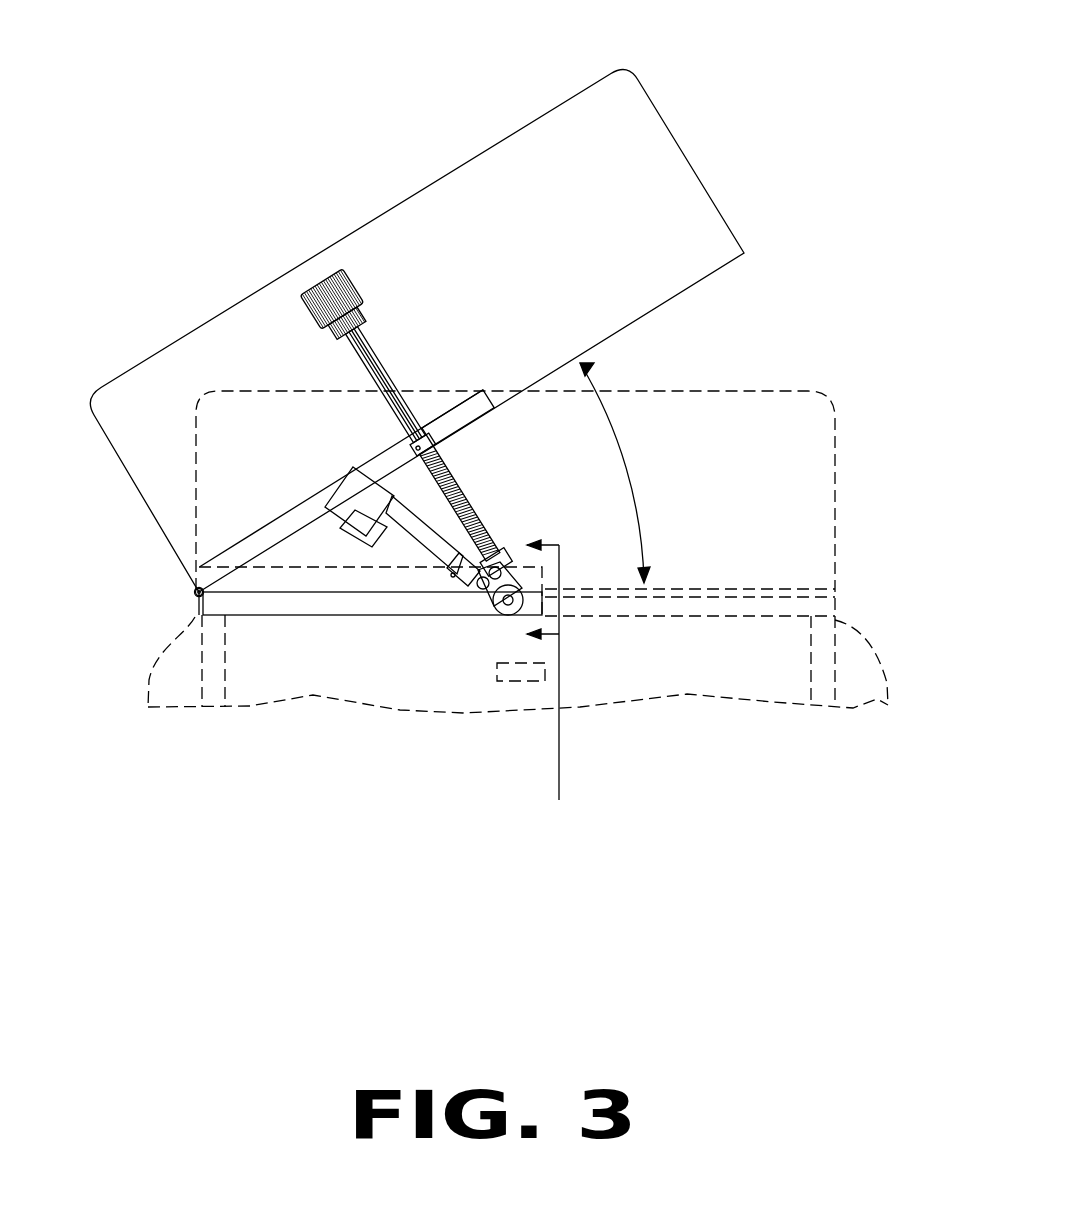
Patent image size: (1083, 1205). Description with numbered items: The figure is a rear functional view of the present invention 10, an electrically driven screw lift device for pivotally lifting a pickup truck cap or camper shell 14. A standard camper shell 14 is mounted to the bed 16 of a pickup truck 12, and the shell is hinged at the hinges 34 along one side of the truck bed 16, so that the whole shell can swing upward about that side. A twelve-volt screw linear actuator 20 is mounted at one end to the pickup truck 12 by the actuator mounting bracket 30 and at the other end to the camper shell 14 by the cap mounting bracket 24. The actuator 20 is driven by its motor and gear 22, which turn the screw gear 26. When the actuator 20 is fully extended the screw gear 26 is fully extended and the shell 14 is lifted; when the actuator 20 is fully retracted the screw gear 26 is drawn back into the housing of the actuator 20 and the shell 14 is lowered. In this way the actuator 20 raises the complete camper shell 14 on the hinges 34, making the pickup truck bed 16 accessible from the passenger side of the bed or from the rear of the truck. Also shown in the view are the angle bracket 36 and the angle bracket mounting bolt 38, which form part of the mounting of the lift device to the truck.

The present invention 10 is at (391, 290).
The pickup truck 12 is at (783, 680).
The camper shell 14 is at (402, 195).
The truck bed 16 is at (830, 606).
The screw linear actuator 20 is at (398, 385).
The motor and gear 22 is at (310, 290).
The cap mounting bracket 24 is at (443, 417).
The screw gear 26 is at (462, 489).
The actuator mounting bracket 30 is at (512, 614).
The hinges 34 is at (190, 593).
The angle bracket 36 is at (307, 528).
The angle bracket mounting bolt 38 is at (240, 592).